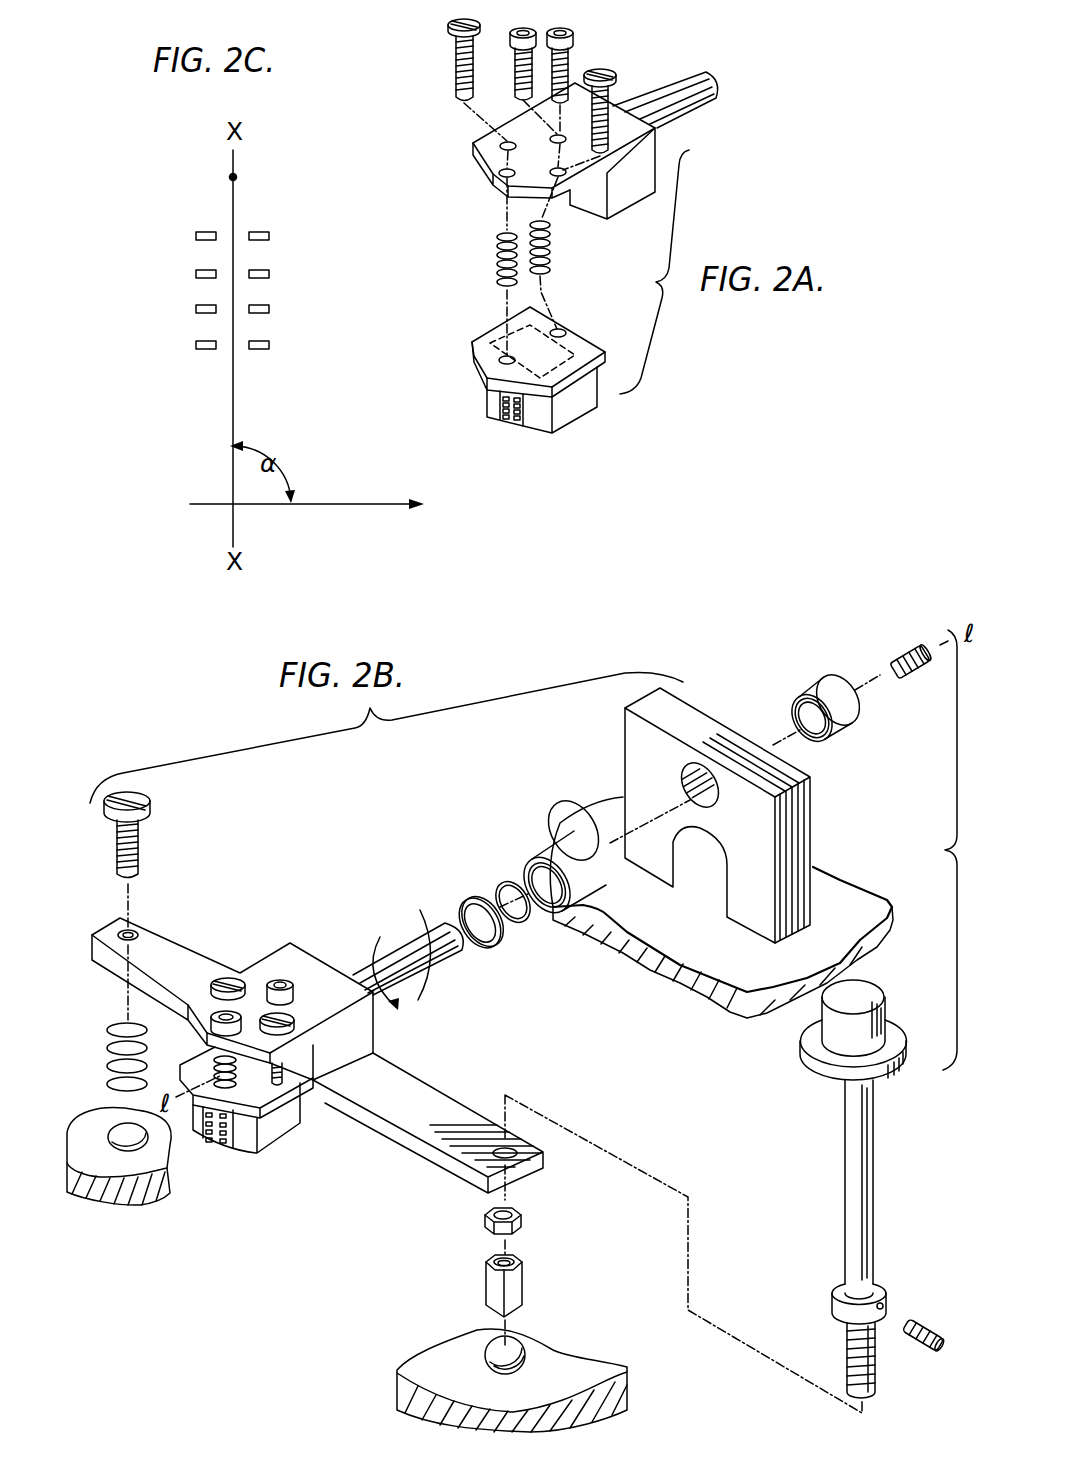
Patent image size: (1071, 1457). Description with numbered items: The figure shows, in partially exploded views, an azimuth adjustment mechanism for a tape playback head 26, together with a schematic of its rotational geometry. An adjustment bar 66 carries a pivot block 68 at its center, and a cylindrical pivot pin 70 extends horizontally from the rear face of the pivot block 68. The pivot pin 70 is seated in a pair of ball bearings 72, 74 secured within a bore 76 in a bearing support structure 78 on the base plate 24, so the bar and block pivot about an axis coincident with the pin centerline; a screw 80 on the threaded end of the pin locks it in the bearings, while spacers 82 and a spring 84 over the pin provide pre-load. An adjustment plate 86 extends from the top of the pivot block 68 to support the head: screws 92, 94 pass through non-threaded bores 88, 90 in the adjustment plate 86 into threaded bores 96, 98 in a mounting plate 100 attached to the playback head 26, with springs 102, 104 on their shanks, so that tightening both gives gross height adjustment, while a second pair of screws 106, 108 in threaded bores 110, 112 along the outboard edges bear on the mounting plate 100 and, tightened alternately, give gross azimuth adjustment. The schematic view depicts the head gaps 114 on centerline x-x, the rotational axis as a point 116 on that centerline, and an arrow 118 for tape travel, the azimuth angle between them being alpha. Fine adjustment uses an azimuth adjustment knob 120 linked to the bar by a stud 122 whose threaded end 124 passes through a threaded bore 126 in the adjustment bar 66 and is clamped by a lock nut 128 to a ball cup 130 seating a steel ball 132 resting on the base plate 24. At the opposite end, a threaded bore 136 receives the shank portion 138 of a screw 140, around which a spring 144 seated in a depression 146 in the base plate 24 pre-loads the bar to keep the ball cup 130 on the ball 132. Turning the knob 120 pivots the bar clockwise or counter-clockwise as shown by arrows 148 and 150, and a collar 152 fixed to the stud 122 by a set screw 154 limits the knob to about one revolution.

In FIG. 2B, the base plate 24 is at (112, 1180).
In FIG. 2A, the playback head 26 is at (578, 405).
In FIG. 2B, the playback head 26 is at (287, 1125).
In FIG. 2B, the adjustment bar 66 is at (428, 1123).
In FIG. 2A, the pivot block 68 is at (627, 200).
In FIG. 2B, the pivot block 68 is at (366, 1036).
In FIG. 2A, the pivot pin 70 is at (708, 74).
In FIG. 2B, the pivot pin 70 is at (420, 933).
In FIG. 2B, the ball bearing 72 is at (583, 832).
In FIG. 2B, the ball bearing 74 is at (820, 690).
In FIG. 2B, the bore 76 is at (685, 783).
In FIG. 2B, the bearing support structure 78 is at (705, 723).
In FIG. 2B, the screw 80 is at (920, 650).
In FIG. 2B, the spacers 82 is at (500, 948).
In FIG. 2B, the spring 84 is at (513, 882).
In FIG. 2A, the adjustment plate 86 is at (471, 156).
In FIG. 2B, the adjustment plate 86 is at (300, 948).
In FIG. 2A, the non-threaded bore 88 is at (490, 184).
In FIG. 2A, the non-threaded bore 90 is at (561, 136).
In FIG. 2A, the screw 92 is at (511, 44).
In FIG. 2B, the screw 92 is at (210, 1038).
In FIG. 2A, the screw 94 is at (574, 44).
In FIG. 2B, the screw 94 is at (290, 984).
In FIG. 2A, the threaded bore 96 is at (500, 360).
In FIG. 2A, the threaded bore 98 is at (563, 330).
In FIG. 2A, the mounting plate 100 is at (492, 335).
In FIG. 2B, the mounting plate 100 is at (247, 1135).
In FIG. 2A, the spring 102 is at (497, 270).
In FIG. 2B, the spring 102 is at (232, 1072).
In FIG. 2A, the spring 104 is at (551, 256).
In FIG. 2A, the screw 106 is at (456, 72).
In FIG. 2B, the screw 106 is at (214, 982).
In FIG. 2A, the screw 108 is at (617, 72).
In FIG. 2B, the screw 108 is at (288, 1012).
In FIG. 2A, the threaded bore 110 is at (501, 143).
In FIG. 2A, the threaded bore 112 is at (562, 180).
In FIG. 2C, the head gaps 114 is at (176, 223).
In FIG. 2C, the point 116 is at (236, 175).
In FIG. 2C, the arrow 118 is at (346, 505).
In FIG. 2B, the azimuth adjustment knob 120 is at (822, 1056).
In FIG. 2B, the stud 122 is at (845, 1206).
In FIG. 2B, the threaded end 124 is at (852, 1352).
In FIG. 2B, the threaded bore 126 is at (520, 1158).
In FIG. 2B, the lock nut 128 is at (487, 1223).
In FIG. 2B, the ball cup 130 is at (516, 1290).
In FIG. 2B, the steel ball 132 is at (488, 1357).
In FIG. 2B, the threaded bore 136 is at (138, 930).
In FIG. 2B, the shank portion 138 is at (139, 846).
In FIG. 2B, the screw 140 is at (143, 803).
In FIG. 2B, the spring 144 is at (108, 1056).
In FIG. 2B, the depression 146 is at (115, 1145).
In FIG. 2B, the arrow 148 is at (378, 953).
In FIG. 2B, the arrow 150 is at (388, 937).
In FIG. 2B, the collar 152 is at (881, 1292).
In FIG. 2B, the set screw 154 is at (922, 1348).